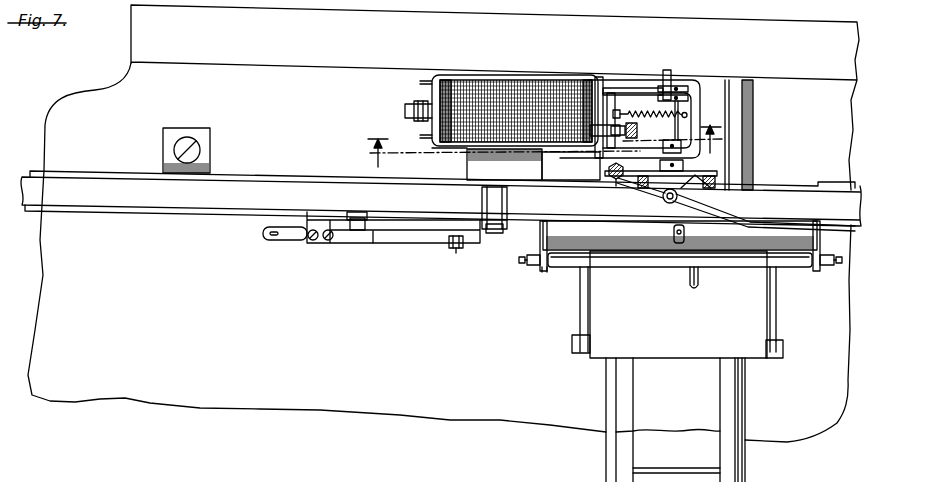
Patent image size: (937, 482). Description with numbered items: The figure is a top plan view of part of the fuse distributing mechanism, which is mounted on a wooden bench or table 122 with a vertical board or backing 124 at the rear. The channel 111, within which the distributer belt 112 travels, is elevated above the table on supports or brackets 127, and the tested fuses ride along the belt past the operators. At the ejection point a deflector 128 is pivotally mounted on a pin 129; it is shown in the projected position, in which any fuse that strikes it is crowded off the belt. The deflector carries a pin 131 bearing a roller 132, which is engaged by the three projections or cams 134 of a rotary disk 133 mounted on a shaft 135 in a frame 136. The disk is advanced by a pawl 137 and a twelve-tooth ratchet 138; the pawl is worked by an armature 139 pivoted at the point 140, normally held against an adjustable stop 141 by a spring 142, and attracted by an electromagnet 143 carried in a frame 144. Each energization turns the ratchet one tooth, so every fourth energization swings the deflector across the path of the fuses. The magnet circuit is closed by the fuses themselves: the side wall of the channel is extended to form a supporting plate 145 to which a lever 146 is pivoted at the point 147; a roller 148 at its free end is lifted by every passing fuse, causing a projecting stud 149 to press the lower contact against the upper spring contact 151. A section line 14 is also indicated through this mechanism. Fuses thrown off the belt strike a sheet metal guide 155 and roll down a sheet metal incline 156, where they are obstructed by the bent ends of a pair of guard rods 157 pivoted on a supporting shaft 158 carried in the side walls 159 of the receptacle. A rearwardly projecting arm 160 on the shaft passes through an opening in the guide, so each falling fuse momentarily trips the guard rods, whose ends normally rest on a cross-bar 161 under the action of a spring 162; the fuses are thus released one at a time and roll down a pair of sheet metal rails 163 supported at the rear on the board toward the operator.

The section line 14- 14 is at (545, 138).
The channel 111 is at (66, 178).
The distributer belt 112 is at (114, 183).
The bench or table 122 is at (313, 400).
The vertical board or backing 124 is at (131, 47).
The supports or brackets 127 is at (206, 172).
The deflector 128 is at (735, 214).
The pin 129 is at (615, 183).
The pin 131 is at (665, 199).
The roller 132 is at (680, 198).
The rotary disk 133 is at (703, 168).
The projections or cams 134 is at (720, 180).
The shaft 135 is at (672, 105).
The frame 136 is at (700, 90).
The pawl 137 is at (651, 84).
The ratchet 138 is at (683, 92).
The armature 139 is at (612, 84).
The pivot point 140 is at (603, 92).
The adjustable stop 141 is at (597, 152).
The spring 142 is at (629, 133).
The electromagnet 143 is at (540, 92).
The frame 144 is at (482, 80).
The supporting plate 145 is at (354, 213).
The lever 146 is at (406, 228).
The pivot point 147 is at (360, 231).
The roller 148 is at (507, 206).
The projecting stud 149 is at (455, 250).
The upper spring contact 151 is at (425, 234).
The sheet metal guide 155 is at (553, 232).
The sheet metal incline 156 is at (755, 308).
The guard rods 157 is at (580, 354).
The supporting shaft 158 is at (748, 268).
The side walls 159 is at (543, 268).
The rearwardly projecting arm 160 is at (674, 234).
The cross-bar 161 is at (572, 339).
The spring 162 is at (702, 285).
The rails 163 is at (735, 452).